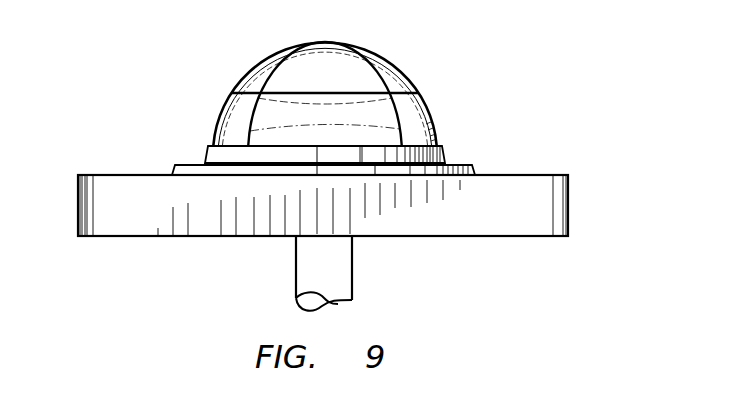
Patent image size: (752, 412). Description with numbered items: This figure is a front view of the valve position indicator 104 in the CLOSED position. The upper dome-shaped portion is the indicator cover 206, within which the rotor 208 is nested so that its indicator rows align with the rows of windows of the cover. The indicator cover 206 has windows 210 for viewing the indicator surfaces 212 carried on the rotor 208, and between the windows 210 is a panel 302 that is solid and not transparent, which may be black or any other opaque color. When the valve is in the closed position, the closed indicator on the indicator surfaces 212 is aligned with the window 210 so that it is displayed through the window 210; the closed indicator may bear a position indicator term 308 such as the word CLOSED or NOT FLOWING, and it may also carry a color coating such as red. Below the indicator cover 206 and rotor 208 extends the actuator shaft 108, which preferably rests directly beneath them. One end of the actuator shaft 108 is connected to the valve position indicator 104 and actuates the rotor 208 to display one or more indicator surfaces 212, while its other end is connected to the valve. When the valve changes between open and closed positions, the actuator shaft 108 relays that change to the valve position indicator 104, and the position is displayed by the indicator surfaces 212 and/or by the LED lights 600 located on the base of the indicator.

The valve position indicator 104 is at (428, 40).
The actuator shaft 108 is at (352, 272).
The indicator cover 206 is at (418, 101).
The rotor 208 is at (430, 133).
The window 210 is at (217, 140).
The indicator surface 212 is at (227, 117).
The panel 302 is at (232, 85).
The position indicator term 308 is at (311, 60).
The LED lights 600 is at (456, 159).